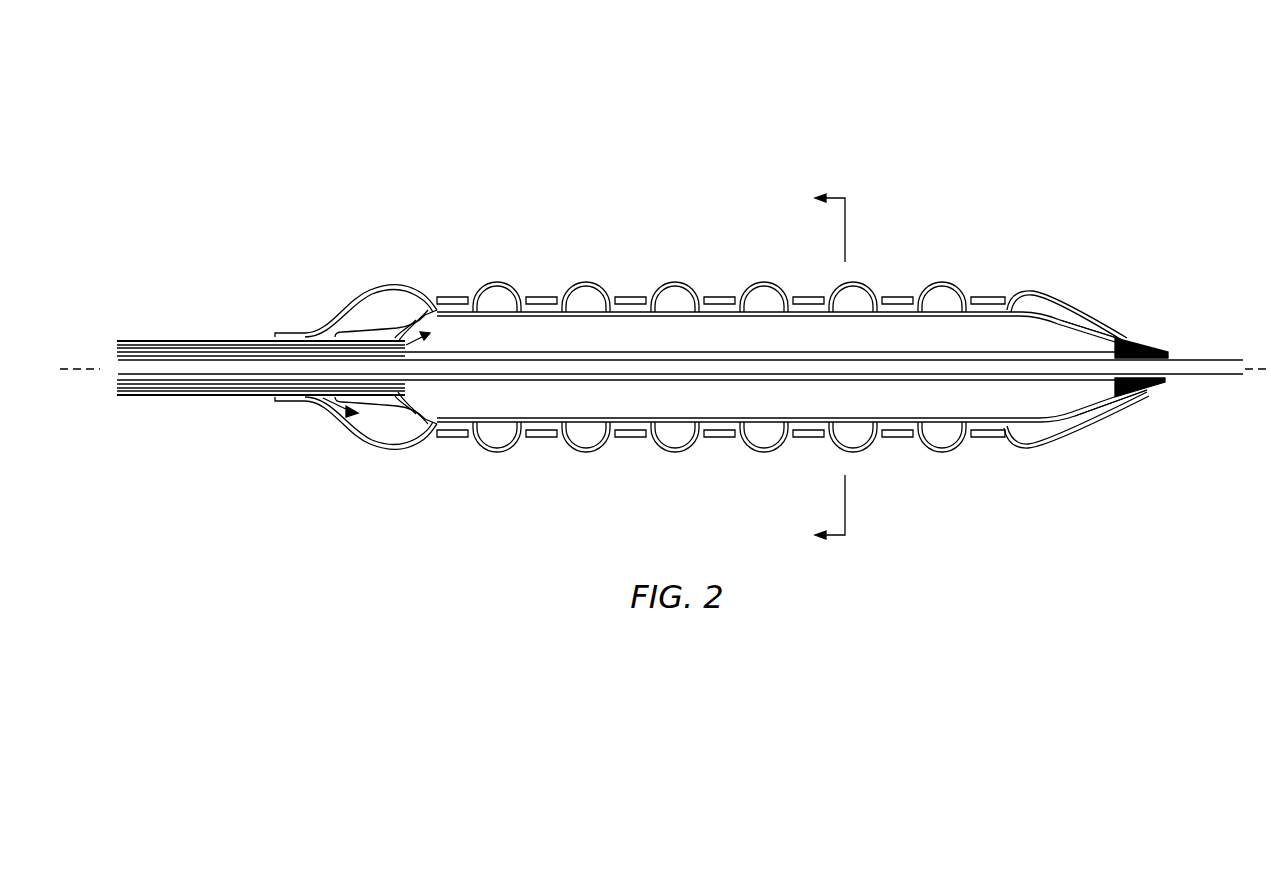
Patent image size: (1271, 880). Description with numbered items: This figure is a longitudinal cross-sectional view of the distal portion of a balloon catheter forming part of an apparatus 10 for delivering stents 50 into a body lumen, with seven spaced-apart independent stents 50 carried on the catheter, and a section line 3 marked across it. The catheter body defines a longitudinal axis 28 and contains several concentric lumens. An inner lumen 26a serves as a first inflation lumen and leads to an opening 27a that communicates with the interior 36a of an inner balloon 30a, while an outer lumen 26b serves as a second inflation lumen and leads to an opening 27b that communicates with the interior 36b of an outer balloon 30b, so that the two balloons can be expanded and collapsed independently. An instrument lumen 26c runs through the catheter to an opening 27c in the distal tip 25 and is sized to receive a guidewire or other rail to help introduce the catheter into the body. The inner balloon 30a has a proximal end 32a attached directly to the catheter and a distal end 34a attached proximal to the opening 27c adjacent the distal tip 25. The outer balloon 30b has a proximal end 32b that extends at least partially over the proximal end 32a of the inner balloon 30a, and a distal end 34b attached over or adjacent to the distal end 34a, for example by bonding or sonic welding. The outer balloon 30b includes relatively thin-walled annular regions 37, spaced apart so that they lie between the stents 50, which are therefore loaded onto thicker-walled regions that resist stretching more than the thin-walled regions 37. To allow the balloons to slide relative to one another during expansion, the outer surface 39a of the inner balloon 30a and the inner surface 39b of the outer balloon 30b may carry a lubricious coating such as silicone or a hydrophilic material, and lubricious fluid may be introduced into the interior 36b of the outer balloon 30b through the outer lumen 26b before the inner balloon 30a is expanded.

The apparatus 10 is at (585, 94).
The section line 3- 3 is at (830, 367).
The distal tip 25 is at (1157, 337).
The inner lumen 26a is at (186, 341).
The outer lumen 26b is at (228, 393).
The instrument lumen 26c is at (1088, 378).
The opening 27a is at (422, 305).
The opening 27b is at (322, 390).
The opening 27c is at (1170, 352).
The longitudinal axis 28 is at (1250, 362).
The inner balloon 30a is at (671, 437).
The outer balloon 30b is at (763, 468).
The proximal end of inner balloon 32a is at (367, 327).
The proximal end of outer balloon 32b is at (295, 332).
The distal end of inner balloon 34a is at (1118, 338).
The distal end of outer balloon 34b is at (1135, 340).
The interior of inner balloon 36a is at (793, 342).
The interior of outer balloon 36b is at (1025, 298).
The annular thin-walled regions 37 is at (586, 280).
The outer surface of inner balloon 39a is at (1043, 424).
The inner surface of outer balloon 39b is at (933, 446).
The stents 50 is at (707, 473).